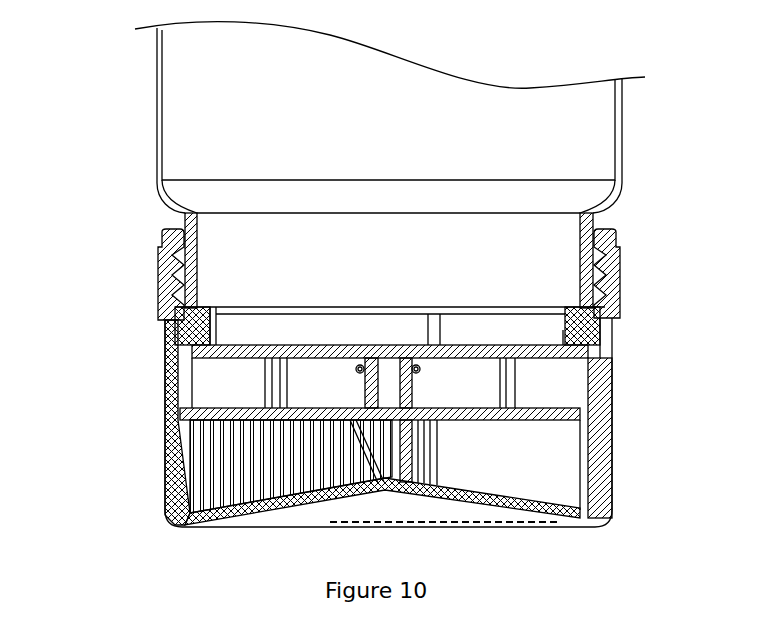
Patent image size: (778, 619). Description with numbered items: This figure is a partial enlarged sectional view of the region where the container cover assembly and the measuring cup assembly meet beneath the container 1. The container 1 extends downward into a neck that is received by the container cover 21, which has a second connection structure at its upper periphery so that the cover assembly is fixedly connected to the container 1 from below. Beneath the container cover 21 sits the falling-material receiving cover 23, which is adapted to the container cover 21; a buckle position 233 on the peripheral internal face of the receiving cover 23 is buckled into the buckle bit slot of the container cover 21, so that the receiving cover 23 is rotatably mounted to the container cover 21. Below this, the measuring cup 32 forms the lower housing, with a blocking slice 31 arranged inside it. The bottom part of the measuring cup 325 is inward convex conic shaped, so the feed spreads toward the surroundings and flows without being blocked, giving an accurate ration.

The container 1 is at (157, 62).
The container cover 21 is at (158, 265).
The falling-material receiving cover 23 is at (170, 362).
The buckle position 233 is at (598, 322).
The blocking slice 31 is at (420, 470).
The measuring cup 32 is at (170, 474).
The bottom part of the measuring cup 325 is at (518, 495).